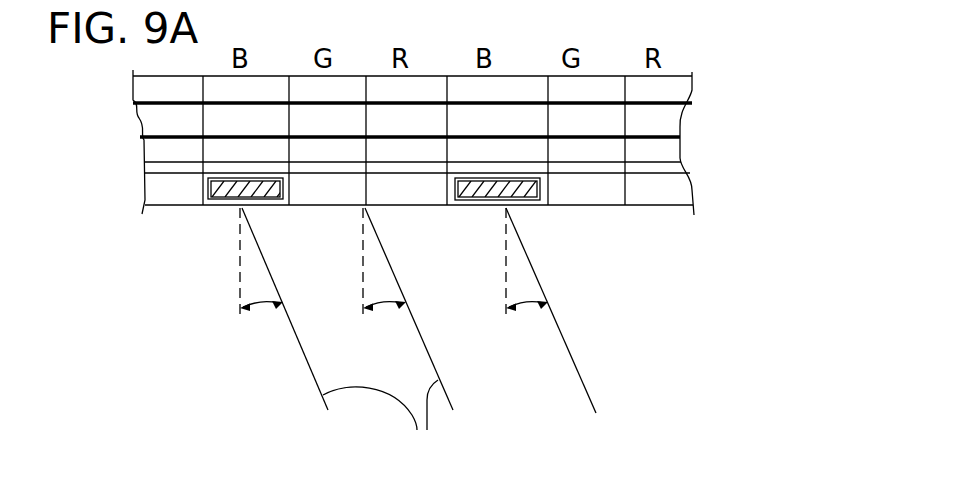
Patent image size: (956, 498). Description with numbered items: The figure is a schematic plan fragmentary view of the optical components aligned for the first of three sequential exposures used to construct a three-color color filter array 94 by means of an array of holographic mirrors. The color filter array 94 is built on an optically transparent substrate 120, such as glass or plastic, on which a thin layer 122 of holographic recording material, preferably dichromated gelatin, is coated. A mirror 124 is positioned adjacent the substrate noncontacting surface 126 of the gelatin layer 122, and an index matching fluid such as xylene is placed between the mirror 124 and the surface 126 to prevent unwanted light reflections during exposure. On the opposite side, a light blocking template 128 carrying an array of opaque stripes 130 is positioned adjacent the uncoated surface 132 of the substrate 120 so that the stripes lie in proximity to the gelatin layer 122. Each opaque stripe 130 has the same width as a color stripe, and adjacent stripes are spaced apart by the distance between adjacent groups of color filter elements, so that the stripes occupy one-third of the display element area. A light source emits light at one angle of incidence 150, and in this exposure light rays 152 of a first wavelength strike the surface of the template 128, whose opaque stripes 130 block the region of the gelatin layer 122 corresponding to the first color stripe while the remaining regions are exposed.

The color filter array 94 is at (99, 159).
The optically transparent substrate 120 is at (682, 155).
The layer of holographic recording material 122 is at (680, 127).
The mirror 124 is at (692, 93).
The substrate noncontacting surface 126 is at (162, 103).
The light blocking template 128 is at (692, 195).
The opaque stripes 130 is at (262, 195).
The uncoated surface 132 is at (160, 161).
The angle of incidence 150 is at (260, 308).
The light rays of a first wavelength 152 is at (587, 393).